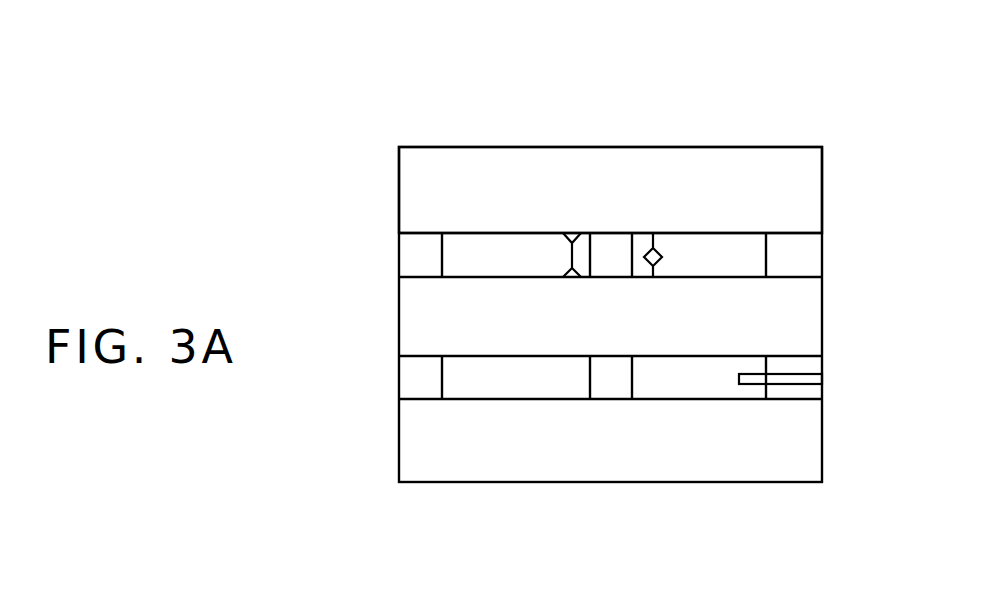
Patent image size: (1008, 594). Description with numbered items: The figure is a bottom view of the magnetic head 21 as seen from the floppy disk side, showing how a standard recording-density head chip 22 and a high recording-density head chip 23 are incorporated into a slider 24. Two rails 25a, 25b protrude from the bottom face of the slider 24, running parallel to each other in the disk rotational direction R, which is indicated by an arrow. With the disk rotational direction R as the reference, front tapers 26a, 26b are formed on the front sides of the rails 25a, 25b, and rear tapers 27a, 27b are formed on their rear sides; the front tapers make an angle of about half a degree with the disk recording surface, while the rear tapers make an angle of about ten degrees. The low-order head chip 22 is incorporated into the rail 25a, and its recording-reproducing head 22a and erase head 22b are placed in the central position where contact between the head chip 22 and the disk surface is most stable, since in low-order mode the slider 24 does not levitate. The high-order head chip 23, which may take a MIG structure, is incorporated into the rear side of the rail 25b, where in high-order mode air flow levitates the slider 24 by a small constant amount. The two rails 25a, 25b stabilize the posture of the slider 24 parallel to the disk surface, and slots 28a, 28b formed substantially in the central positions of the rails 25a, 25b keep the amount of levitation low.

The magnetic head 21 is at (346, 430).
The standard recording-density head chip 22 is at (487, 245).
The recording-reproducing head 22a is at (571, 233).
The erase head 22b is at (655, 247).
The high recording-density head chip 23 is at (815, 380).
The slider 24 is at (748, 162).
The rail 25a is at (733, 233).
The rail 25b is at (733, 401).
The front taper 26a is at (410, 257).
The front taper 26b is at (410, 380).
The rear taper 27a is at (805, 258).
The rear taper 27b is at (797, 363).
The slot 28a is at (607, 245).
The slot 28b is at (612, 390).
The disk rotational direction R is at (376, 318).